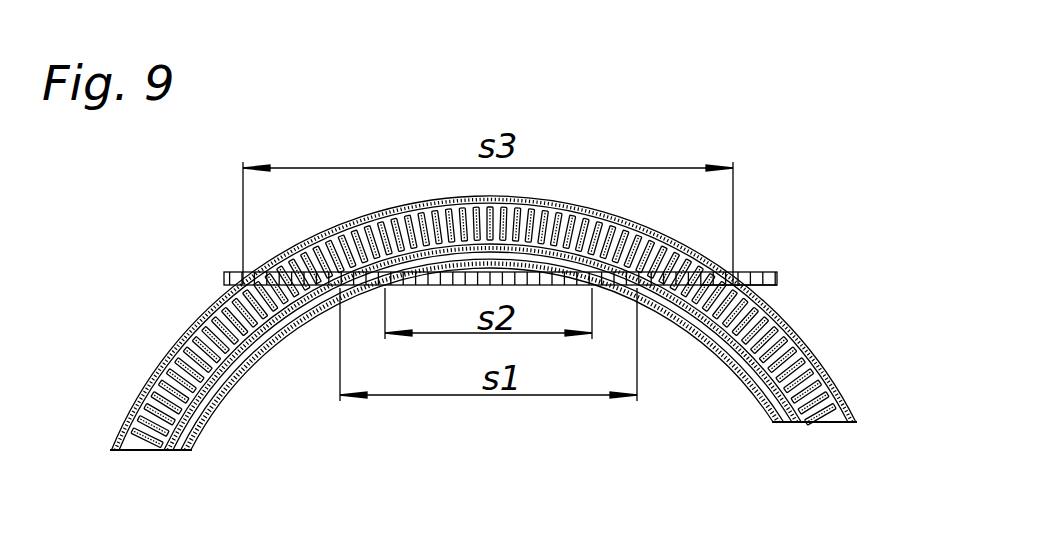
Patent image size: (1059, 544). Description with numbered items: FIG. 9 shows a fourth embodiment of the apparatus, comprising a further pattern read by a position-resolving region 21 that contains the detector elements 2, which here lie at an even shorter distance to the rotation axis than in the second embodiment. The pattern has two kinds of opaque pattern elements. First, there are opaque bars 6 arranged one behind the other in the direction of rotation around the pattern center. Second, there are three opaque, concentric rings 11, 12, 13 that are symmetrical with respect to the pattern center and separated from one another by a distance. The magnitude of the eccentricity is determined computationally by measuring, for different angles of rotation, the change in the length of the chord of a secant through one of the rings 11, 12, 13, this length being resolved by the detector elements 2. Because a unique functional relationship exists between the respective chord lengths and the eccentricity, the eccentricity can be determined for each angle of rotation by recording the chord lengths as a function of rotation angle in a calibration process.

The detector elements 2 is at (775, 272).
The position-resolving region 21 is at (789, 283).
The opaque bars 6 is at (808, 423).
The opaque concentric ring 11 is at (196, 424).
The opaque concentric ring 12 is at (230, 353).
The opaque concentric ring 13 is at (186, 330).